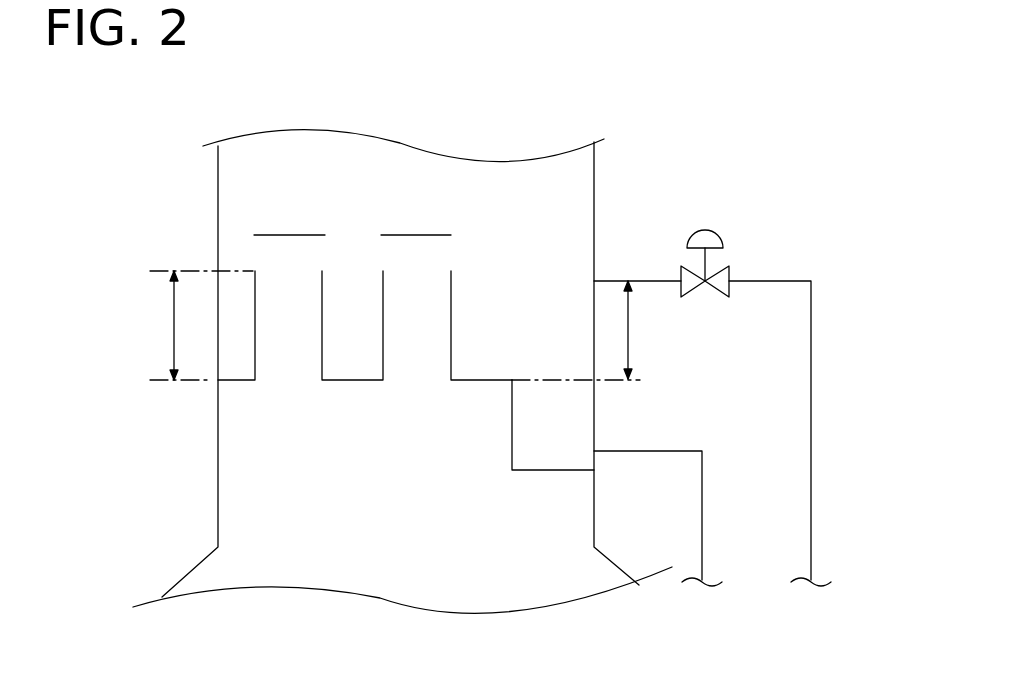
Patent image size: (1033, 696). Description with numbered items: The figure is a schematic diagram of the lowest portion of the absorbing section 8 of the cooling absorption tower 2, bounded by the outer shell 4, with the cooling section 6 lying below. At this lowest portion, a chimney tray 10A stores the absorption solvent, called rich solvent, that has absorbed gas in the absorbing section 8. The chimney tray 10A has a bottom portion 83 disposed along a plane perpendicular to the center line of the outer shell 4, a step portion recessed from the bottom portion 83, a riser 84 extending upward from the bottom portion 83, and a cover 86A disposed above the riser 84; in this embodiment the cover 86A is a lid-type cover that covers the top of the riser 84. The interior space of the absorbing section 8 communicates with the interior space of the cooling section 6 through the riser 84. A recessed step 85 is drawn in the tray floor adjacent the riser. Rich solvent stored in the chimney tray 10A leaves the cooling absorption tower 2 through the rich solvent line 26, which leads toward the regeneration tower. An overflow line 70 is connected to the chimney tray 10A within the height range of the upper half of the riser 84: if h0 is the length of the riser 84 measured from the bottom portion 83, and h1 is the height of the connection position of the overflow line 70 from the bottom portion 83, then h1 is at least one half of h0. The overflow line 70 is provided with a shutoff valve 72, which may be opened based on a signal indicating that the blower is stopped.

The cooling absorption tower 2 is at (718, 102).
The outer shell 4 is at (218, 435).
The cooling section 6 is at (166, 570).
The absorbing section 8 is at (176, 170).
The chimney tray 10A is at (553, 245).
The rich solvent line 26 is at (703, 488).
The overflow line 70 is at (812, 320).
The shutoff valve 72 is at (708, 228).
The bottom portion 83 is at (350, 382).
The riser 84 is at (451, 318).
The connecting passage 85 is at (545, 472).
The cover 86A is at (428, 235).
The length of the riser h0 is at (160, 325).
The height of the connection position of the overflow line h1 is at (642, 330).